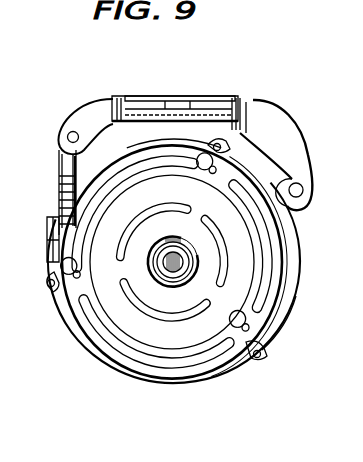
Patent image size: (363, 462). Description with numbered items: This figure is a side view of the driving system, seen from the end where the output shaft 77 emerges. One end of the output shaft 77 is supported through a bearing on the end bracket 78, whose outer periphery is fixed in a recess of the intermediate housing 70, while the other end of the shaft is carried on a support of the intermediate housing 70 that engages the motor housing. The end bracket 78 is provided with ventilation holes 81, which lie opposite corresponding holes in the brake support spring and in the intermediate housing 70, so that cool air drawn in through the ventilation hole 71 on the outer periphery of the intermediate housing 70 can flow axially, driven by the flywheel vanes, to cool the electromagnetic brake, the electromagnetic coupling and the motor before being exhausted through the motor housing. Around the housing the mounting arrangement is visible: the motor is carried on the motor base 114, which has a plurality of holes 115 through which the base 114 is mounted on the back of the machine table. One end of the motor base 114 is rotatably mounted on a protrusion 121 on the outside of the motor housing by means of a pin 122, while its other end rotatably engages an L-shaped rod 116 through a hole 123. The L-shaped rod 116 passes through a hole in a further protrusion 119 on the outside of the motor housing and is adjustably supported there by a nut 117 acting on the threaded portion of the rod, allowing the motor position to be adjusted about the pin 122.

The intermediate housing 70 is at (174, 261).
The ventilation hole 71 is at (166, 260).
The output shaft 77 is at (183, 268).
The end bracket 78 is at (172, 262).
The ventilation holes 81 is at (172, 262).
The motor base 114 is at (246, 125).
The holes 115 is at (125, 99).
The L-shaped rod 116 is at (60, 160).
The nut 117 is at (56, 219).
The protrusion 119 is at (49, 253).
The protrusion 121 is at (288, 310).
The pin 122 is at (300, 128).
The hole 123 is at (68, 132).